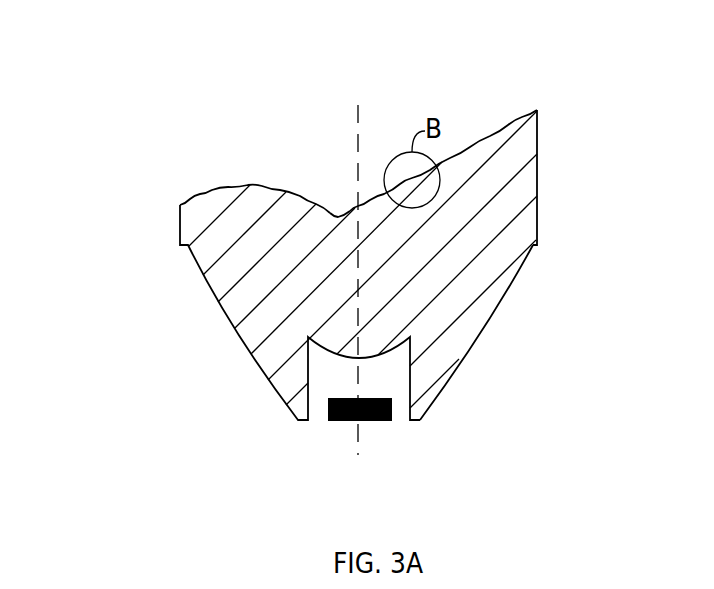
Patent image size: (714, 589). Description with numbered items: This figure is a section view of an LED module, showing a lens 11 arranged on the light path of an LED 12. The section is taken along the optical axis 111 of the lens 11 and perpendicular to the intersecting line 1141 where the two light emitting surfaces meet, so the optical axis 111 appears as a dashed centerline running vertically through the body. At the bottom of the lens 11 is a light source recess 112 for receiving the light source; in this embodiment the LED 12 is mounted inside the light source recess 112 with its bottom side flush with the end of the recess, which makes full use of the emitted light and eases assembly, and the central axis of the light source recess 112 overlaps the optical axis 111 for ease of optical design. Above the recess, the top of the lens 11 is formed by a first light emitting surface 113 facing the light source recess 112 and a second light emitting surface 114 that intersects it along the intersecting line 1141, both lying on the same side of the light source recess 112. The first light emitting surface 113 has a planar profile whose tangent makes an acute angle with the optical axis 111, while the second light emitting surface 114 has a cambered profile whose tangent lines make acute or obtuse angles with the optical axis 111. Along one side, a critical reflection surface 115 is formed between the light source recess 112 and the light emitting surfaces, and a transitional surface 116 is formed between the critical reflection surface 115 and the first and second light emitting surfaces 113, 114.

The lens 11 is at (227, 125).
The optical axis 111 is at (358, 110).
The light source recess 112 is at (375, 422).
The first light emitting surface 113 is at (468, 143).
The second light emitting surface 114 is at (228, 187).
The intersecting line 1141 is at (338, 215).
The critical reflection surface 115 is at (510, 293).
The transitional surface 116 is at (538, 170).
The LED 12 is at (392, 398).